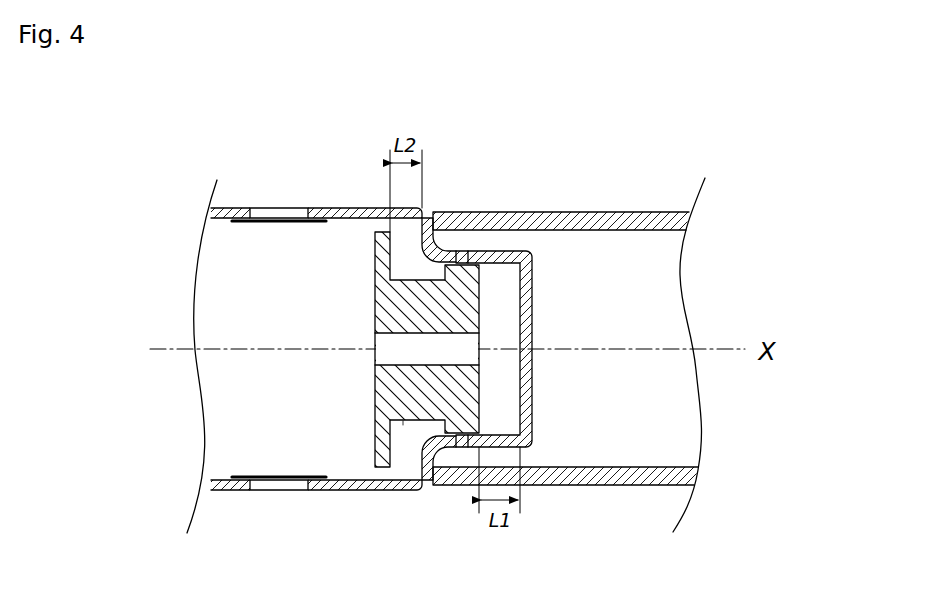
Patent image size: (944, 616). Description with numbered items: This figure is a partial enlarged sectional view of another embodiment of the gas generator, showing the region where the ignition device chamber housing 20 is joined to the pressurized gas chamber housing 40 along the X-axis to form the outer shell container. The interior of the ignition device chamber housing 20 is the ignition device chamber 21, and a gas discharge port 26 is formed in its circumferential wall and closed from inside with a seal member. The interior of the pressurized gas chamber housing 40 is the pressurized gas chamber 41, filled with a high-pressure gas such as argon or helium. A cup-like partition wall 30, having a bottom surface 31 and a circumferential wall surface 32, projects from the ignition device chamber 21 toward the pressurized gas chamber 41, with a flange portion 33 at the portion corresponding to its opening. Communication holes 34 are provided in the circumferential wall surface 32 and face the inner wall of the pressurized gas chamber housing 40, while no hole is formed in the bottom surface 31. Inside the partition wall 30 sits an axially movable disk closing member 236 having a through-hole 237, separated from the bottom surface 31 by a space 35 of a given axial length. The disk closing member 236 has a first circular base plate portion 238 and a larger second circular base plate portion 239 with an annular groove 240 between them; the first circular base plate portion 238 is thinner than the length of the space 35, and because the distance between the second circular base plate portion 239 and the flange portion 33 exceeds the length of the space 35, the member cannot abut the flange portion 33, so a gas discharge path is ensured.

The ignition device chamber housing 20 is at (323, 208).
The ignition device chamber 21 is at (256, 294).
The gas discharge port 26 is at (278, 208).
The partition wall 30 is at (526, 307).
The bottom surface 31 is at (533, 291).
The circumferential wall surface 32 is at (499, 251).
The flange portion 33 is at (451, 237).
The communication holes 34 is at (460, 251).
The space 35 is at (513, 331).
The pressurized gas chamber housing 40 is at (607, 212).
The pressurized gas chamber 41 is at (648, 316).
The disk closing member 236 is at (387, 395).
The through-hole 237 is at (375, 356).
The first circular base plate portion 238 is at (460, 430).
The second circular base plate portion 239 is at (379, 470).
The annular groove 240 is at (403, 422).